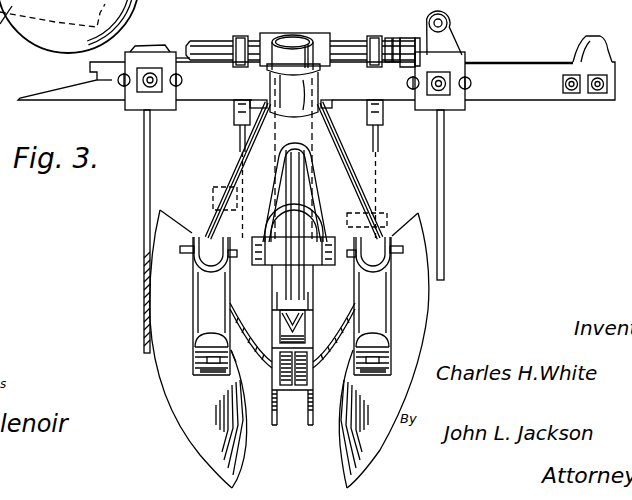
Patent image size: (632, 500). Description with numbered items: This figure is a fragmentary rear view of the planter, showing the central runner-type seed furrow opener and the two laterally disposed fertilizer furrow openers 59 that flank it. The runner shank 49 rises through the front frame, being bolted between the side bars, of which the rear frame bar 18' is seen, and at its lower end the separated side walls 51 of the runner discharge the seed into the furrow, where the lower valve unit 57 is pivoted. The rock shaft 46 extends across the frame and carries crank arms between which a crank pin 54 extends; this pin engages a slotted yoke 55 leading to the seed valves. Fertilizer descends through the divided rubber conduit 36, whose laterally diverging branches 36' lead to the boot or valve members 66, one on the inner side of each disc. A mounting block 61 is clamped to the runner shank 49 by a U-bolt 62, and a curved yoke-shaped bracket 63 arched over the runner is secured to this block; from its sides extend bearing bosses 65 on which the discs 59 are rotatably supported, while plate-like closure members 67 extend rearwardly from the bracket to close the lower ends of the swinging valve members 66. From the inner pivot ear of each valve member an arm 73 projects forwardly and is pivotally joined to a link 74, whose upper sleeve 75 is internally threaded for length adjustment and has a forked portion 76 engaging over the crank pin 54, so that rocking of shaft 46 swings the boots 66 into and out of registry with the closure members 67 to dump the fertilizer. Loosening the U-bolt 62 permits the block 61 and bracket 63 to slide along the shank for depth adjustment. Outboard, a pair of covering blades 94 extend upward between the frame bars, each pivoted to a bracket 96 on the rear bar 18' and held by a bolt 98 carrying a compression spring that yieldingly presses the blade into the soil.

The rock shaft 46 is at (90, 65).
The rear frame bar 18' is at (71, 98).
The bracket 96 is at (124, 110).
The crank pin 54 is at (390, 43).
The slotted yoke 55 is at (415, 33).
The forked portion 76 is at (250, 24).
The bolt 98 is at (455, 23).
The divided conduit 36 is at (291, 59).
The branch conduit 36' is at (307, 160).
The sleeve 75 is at (236, 108).
The link 74 is at (238, 155).
The U-bolt 62 is at (292, 205).
The runner shank 49 is at (303, 188).
The mounting block 61 is at (258, 228).
The curved bracket 63 is at (250, 278).
The arm 73 is at (222, 233).
The valve member 66 is at (197, 347).
The closure member 67 is at (194, 376).
The bearing bosses 65 is at (232, 306).
The furrow openers 59 is at (166, 212).
The covering blades 94 is at (143, 333).
The side walls 51 is at (160, 0).
The lower valve unit 57 is at (263, 367).